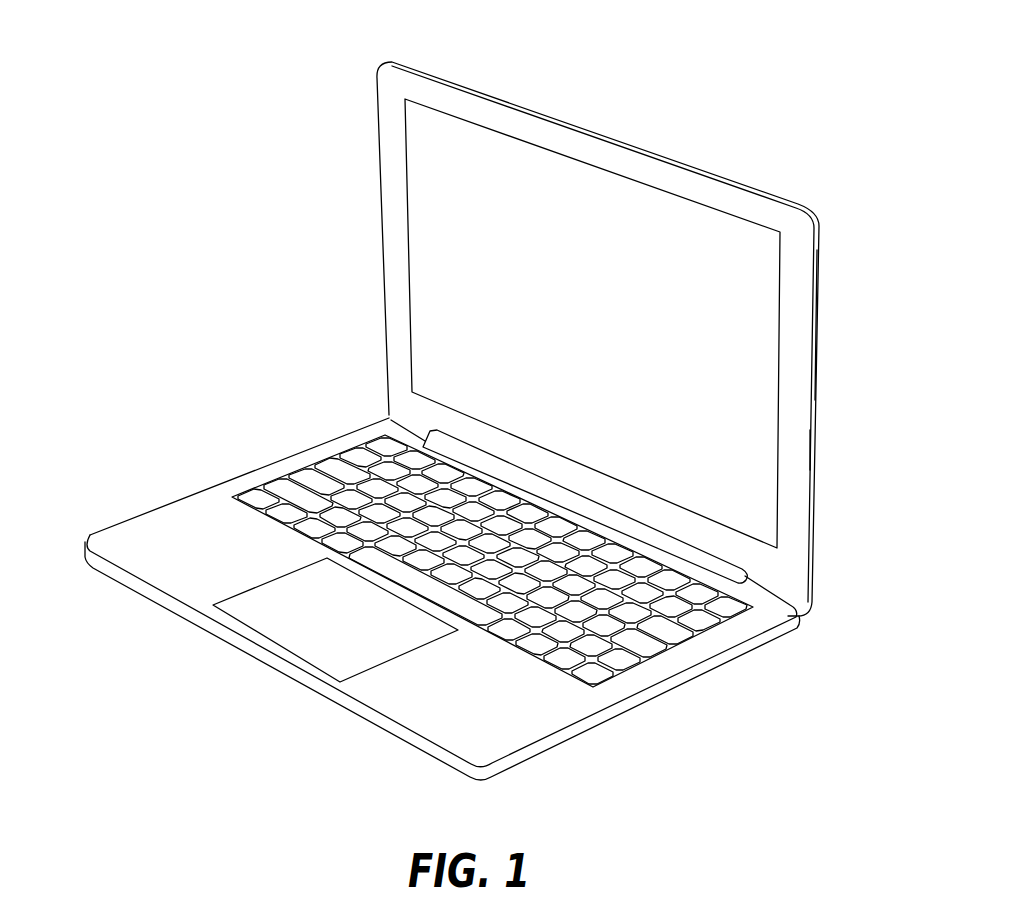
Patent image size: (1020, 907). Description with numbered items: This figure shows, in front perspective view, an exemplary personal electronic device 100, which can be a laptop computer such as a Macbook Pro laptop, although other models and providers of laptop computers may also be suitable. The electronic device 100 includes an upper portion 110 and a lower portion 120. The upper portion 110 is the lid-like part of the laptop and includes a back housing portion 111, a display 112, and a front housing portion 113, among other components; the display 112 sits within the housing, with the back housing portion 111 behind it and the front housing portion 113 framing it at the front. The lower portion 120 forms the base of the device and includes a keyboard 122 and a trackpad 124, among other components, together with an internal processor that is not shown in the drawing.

The personal electronic device 100 is at (178, 72).
The upper portion 110 is at (645, 339).
The back housing portion 111 is at (815, 332).
The display 112 is at (602, 334).
The front housing portion 113 is at (788, 454).
The lower portion 120 is at (442, 596).
The keyboard 122 is at (350, 490).
The trackpad 124 is at (352, 628).